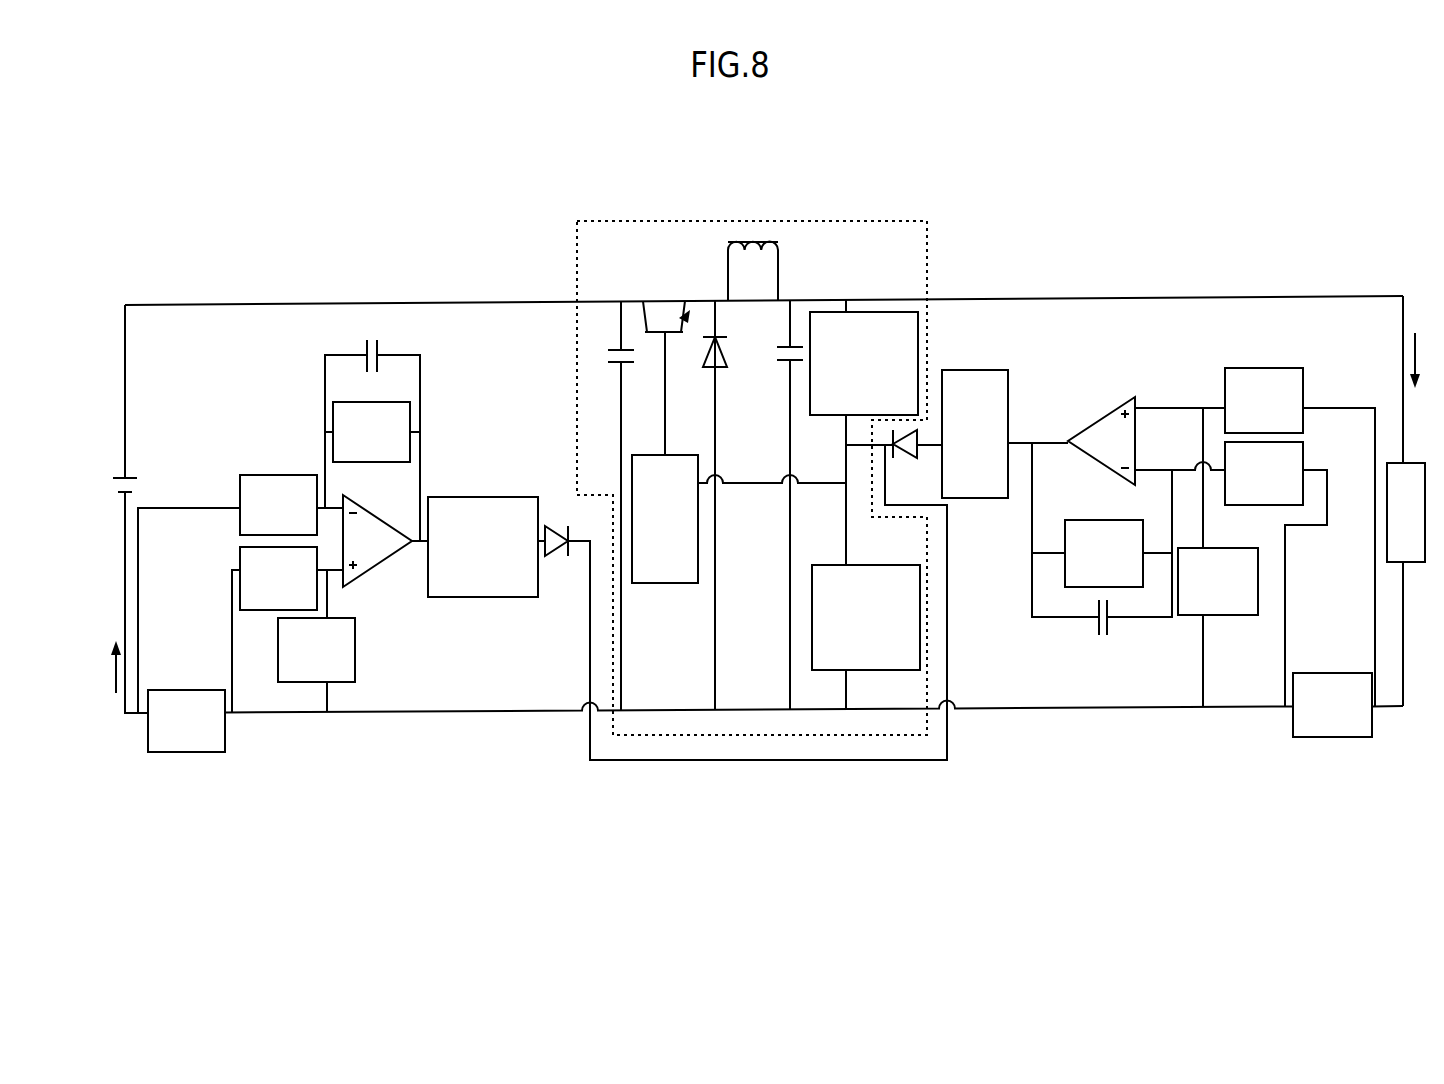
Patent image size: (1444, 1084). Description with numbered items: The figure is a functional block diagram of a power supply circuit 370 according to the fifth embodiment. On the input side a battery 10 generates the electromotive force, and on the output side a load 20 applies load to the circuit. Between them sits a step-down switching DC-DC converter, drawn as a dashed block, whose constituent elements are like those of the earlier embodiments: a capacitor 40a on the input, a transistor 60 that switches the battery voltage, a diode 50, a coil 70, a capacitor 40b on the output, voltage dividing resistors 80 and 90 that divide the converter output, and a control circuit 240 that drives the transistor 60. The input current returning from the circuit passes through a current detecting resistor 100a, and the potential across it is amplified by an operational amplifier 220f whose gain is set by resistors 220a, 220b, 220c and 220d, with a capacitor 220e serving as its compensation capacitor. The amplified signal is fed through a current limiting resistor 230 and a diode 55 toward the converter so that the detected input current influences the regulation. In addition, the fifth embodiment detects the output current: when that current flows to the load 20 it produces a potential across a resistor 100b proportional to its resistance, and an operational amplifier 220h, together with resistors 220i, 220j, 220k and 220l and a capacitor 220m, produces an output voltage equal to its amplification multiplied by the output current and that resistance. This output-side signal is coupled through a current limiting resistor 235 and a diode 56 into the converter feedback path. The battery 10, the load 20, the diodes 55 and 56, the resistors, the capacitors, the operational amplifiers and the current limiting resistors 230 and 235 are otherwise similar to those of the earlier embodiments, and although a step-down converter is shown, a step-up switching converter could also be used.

The power supply circuit 370 is at (318, 276).
The battery 10 is at (132, 477).
The load 20 is at (1401, 462).
The capacitor 40a is at (620, 350).
The capacitor 40b is at (785, 347).
The diode 50 is at (717, 354).
The diode 55 is at (548, 522).
The diode 56 is at (905, 462).
The transistor 60 is at (678, 325).
The coil 70 is at (783, 276).
The voltage dividing resistor 80 is at (919, 340).
The voltage dividing resistor 90 is at (878, 565).
The current detecting resistor 100a is at (170, 690).
The resistor 100b is at (1315, 673).
The resistor 220a is at (348, 397).
The resistor 220b is at (358, 652).
The resistor 220c is at (239, 488).
The resistor 220d is at (240, 552).
The capacitor 220e is at (382, 352).
The operational amplifier 220f is at (387, 520).
The operational amplifier 220h is at (1105, 405).
The resistor 220i is at (1100, 515).
The resistor 220j is at (1305, 392).
The resistor 220k is at (1303, 458).
The resistor 220l is at (1215, 547).
The capacitor 220m is at (1110, 625).
The current limiting resistor 230 is at (482, 497).
The current limiting resistor 235 is at (998, 368).
The control circuit 240 is at (672, 448).